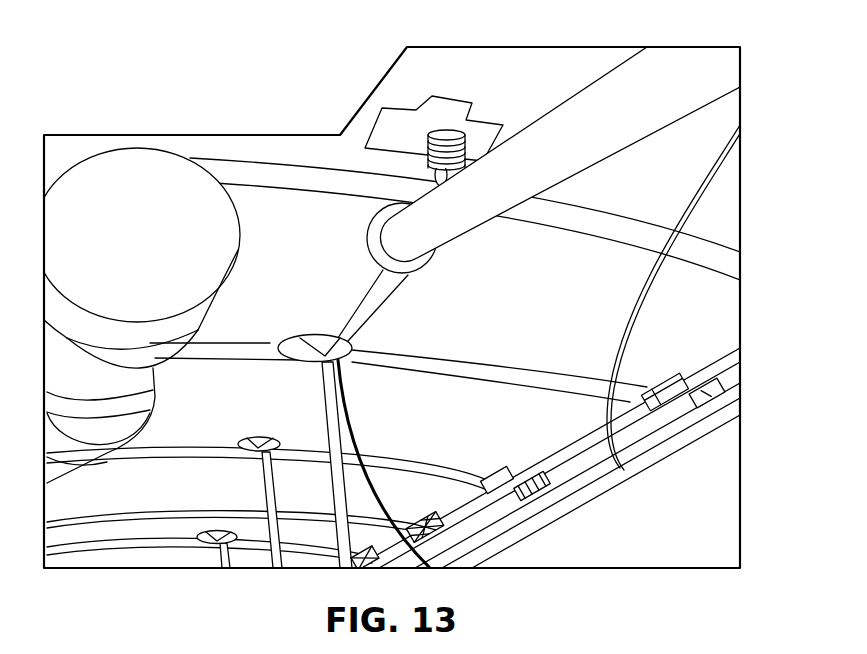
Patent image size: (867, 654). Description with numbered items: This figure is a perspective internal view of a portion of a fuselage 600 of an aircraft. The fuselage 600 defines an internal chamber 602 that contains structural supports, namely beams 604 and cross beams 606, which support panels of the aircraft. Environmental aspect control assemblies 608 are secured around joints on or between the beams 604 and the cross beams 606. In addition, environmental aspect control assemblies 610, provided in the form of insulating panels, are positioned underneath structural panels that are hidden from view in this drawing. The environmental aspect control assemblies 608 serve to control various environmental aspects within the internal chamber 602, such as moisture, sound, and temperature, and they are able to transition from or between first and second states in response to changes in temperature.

The fuselage 600 is at (730, 122).
The internal chamber 602 is at (717, 323).
The beams 604 is at (710, 60).
The cross beams 606 is at (727, 260).
The environmental aspect control assemblies 608 is at (647, 390).
The environmental aspect control assemblies 610 is at (508, 412).